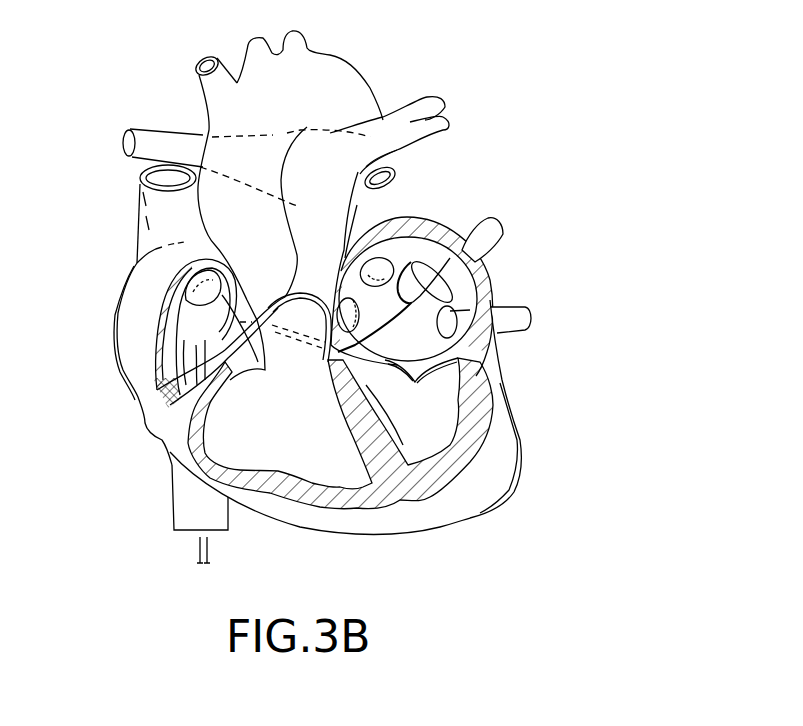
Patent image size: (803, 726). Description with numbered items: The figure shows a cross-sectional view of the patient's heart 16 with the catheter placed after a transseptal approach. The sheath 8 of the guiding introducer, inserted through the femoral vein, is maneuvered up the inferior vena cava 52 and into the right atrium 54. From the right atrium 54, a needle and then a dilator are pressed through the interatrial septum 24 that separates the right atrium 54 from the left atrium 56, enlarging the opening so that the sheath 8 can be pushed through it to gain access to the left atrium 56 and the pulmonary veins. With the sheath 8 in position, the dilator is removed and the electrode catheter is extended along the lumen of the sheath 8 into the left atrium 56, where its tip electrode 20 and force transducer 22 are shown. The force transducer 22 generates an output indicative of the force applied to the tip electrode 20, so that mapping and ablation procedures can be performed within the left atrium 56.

The sheath 8 is at (157, 392).
The heart 16 is at (512, 395).
The tip electrode 20 is at (450, 258).
The force transducer 22 is at (411, 262).
The interatrial septum 24 is at (325, 361).
The inferior vena cava 52 is at (190, 502).
The right atrium 54 is at (232, 318).
The left atrium 56 is at (430, 348).